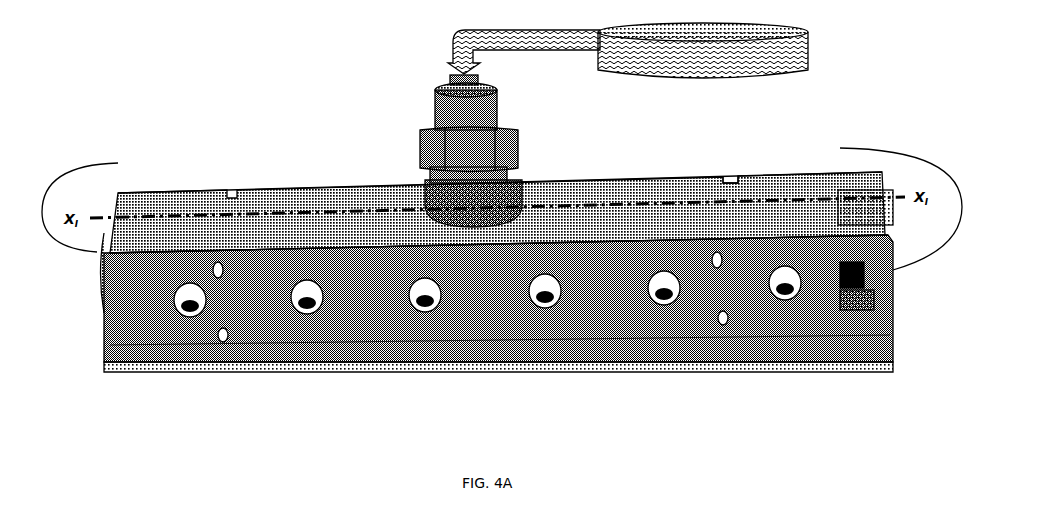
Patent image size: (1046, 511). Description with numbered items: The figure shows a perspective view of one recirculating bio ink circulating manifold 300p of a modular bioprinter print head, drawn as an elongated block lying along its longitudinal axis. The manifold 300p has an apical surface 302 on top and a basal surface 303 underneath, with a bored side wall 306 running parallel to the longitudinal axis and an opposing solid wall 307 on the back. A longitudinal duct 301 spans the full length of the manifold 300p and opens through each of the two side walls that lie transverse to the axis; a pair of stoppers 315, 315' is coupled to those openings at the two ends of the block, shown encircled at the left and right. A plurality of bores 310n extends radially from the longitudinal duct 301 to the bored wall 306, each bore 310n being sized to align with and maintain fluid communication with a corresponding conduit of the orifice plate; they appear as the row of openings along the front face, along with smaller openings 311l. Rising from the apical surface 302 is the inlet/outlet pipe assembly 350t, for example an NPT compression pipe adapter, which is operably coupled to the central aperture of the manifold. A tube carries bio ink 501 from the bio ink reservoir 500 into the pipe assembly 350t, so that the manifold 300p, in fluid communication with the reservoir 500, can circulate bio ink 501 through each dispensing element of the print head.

The bio ink circulating manifold 300p is at (218, 125).
The longitudinal duct 301 is at (635, 200).
The apical surface 302 is at (340, 200).
The basal surface 303 is at (275, 350).
The bored side wall 306 is at (600, 305).
The solid wall 307 is at (760, 178).
The bore 310n is at (425, 300).
The locating hole 311l is at (213, 272).
The stopper 315 is at (96, 204).
The stopper 315' is at (885, 226).
The inlet/outlet pipe assembly 350t is at (520, 155).
The bio ink reservoir 500 is at (703, 50).
The bio ink 501 is at (455, 47).